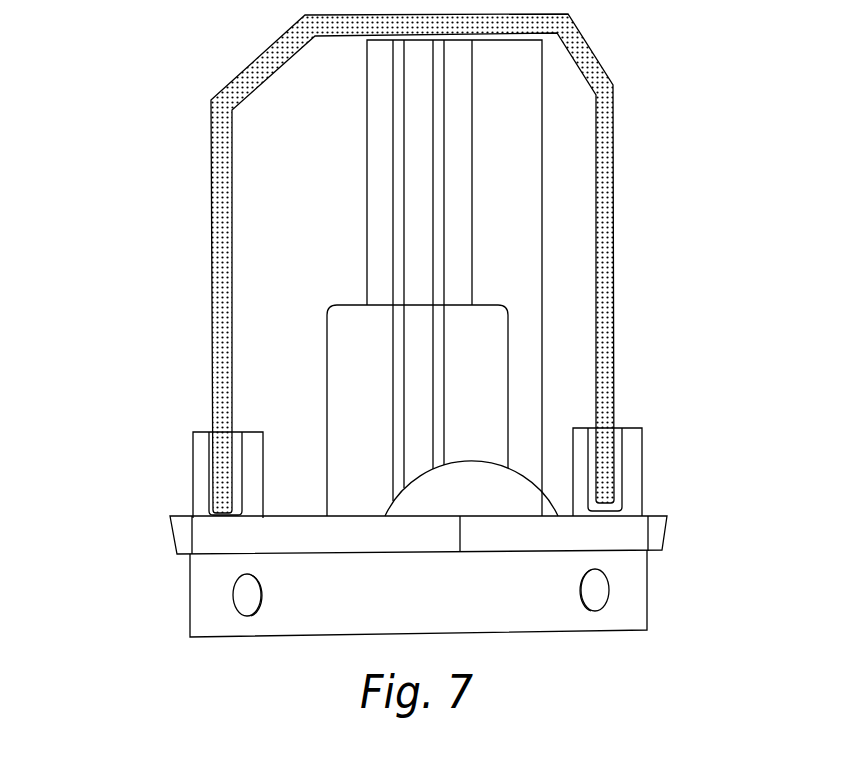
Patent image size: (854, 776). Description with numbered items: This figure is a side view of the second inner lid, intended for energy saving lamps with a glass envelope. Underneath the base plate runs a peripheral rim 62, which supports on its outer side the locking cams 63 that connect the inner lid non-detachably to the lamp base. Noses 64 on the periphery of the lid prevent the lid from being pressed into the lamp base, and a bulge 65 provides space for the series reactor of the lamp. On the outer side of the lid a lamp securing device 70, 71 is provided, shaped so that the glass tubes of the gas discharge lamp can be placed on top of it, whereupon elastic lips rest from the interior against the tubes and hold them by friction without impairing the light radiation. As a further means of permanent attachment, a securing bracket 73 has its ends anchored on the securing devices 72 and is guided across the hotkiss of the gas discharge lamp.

The peripheral rim 62 is at (330, 617).
The locking cams 63 is at (228, 618).
The noses 64 is at (177, 537).
The bulge 65 is at (505, 495).
The lamp securing device 70 is at (483, 368).
The lamp securing device 71 is at (527, 150).
The securing devices 72 is at (185, 465).
The securing bracket 73 is at (607, 273).